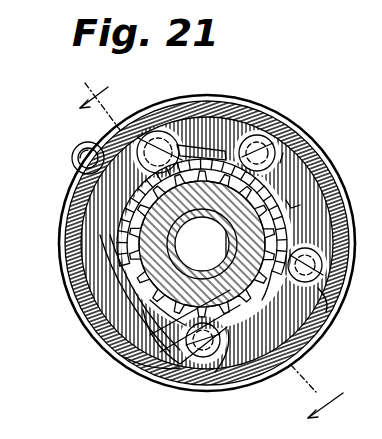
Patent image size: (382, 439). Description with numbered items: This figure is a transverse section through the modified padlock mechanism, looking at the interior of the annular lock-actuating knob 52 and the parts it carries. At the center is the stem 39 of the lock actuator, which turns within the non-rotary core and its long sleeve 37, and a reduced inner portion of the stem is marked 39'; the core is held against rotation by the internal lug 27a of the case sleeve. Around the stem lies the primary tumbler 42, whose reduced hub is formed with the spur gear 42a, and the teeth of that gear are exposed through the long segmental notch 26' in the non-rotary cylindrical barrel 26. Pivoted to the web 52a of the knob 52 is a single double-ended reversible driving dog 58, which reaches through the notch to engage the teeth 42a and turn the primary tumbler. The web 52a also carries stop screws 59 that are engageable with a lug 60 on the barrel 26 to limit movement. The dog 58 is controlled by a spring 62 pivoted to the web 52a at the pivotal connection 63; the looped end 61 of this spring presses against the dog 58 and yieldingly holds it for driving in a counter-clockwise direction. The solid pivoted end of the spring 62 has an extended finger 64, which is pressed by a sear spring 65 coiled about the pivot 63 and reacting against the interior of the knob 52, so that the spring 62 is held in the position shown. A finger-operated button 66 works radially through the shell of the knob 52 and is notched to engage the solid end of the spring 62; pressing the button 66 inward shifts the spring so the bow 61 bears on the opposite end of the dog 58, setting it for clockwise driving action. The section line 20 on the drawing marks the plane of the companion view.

The section line 20- 20 is at (213, 249).
The barrel 26 is at (136, 272).
The segmental notch 26' is at (149, 343).
The internal lug 27a is at (340, 270).
The sleeve 37 is at (160, 300).
The stem 39 is at (150, 244).
The gear extension 39' is at (154, 358).
The primary tumbler 42 is at (250, 193).
The spur gear 42a is at (279, 288).
The lock-actuating knob 52 is at (348, 197).
The web 52a is at (241, 373).
The reversible driving dog 58 is at (178, 367).
The stop screws 59 is at (326, 300).
The lug 60 is at (291, 197).
The looped end 61 is at (140, 368).
The spring 62 is at (62, 232).
The pivotal connection 63 is at (136, 140).
The finger 64 is at (219, 145).
The sear spring 65 is at (158, 133).
The button 66 is at (74, 158).